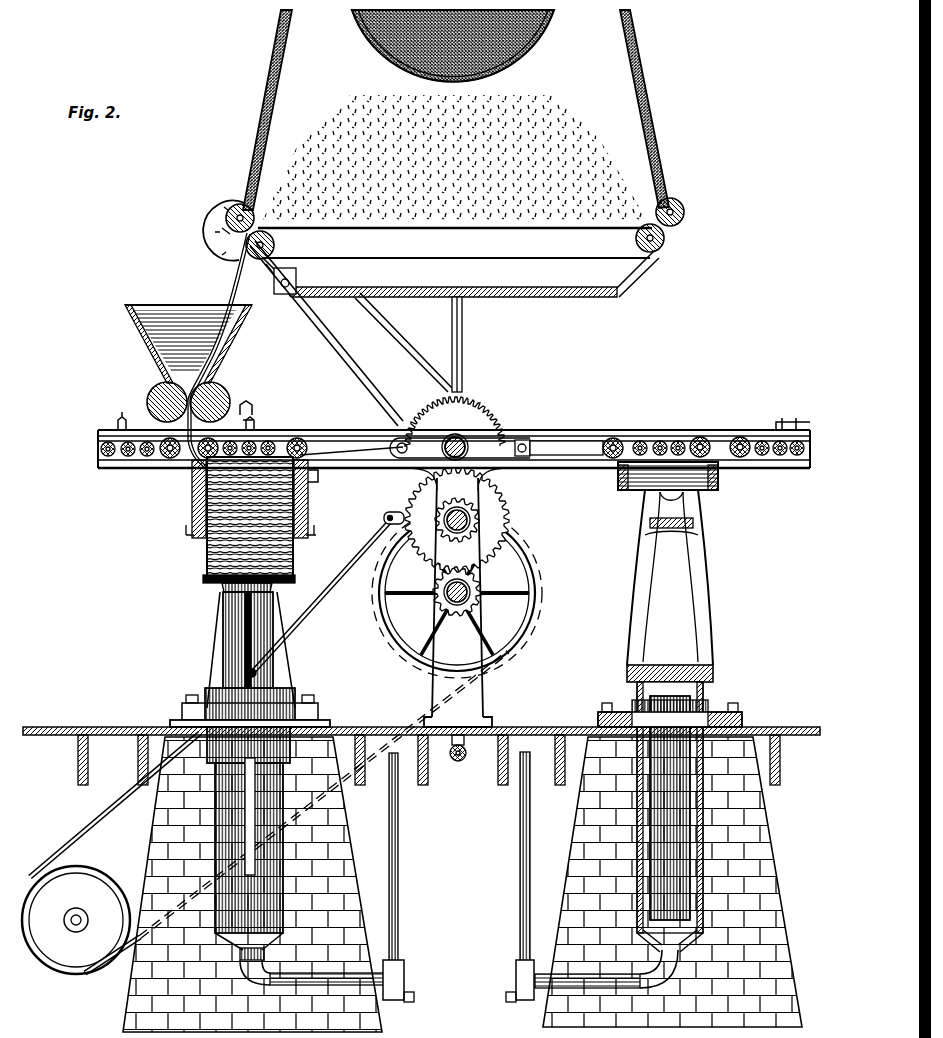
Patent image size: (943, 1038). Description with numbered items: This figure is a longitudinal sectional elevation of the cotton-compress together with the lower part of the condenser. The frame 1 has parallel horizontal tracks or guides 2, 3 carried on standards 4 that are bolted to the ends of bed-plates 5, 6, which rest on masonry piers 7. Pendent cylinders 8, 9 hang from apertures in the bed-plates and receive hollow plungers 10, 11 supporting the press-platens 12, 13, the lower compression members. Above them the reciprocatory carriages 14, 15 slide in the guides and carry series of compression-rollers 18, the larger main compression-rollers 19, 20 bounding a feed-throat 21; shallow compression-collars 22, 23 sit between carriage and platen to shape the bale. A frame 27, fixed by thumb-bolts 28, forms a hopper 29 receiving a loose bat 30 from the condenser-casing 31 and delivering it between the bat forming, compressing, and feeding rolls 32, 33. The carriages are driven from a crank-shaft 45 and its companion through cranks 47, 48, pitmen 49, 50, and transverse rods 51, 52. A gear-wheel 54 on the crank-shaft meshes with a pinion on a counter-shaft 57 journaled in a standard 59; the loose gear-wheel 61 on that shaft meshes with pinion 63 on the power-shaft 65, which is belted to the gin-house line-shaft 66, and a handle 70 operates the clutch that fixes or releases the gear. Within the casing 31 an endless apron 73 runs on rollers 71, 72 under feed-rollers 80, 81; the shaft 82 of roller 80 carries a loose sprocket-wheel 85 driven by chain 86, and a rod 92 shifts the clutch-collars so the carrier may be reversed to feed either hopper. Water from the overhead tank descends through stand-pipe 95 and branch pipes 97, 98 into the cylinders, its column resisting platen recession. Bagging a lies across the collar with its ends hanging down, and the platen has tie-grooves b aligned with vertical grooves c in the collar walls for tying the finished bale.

The frame of the press 1 is at (454, 478).
The track or guide 2 is at (403, 342).
The track or guide 3 is at (360, 462).
The standards 4 is at (214, 650).
The bed-plate 5 is at (305, 712).
The bed-plate 6 is at (732, 714).
The piers 7 is at (347, 840).
The pendent cylinder 8 is at (215, 820).
The pendent cylinder 9 is at (690, 815).
The ram or plunger 10 is at (240, 628).
The ram or plunger 11 is at (705, 853).
The press-platen 12 is at (205, 584).
The press-platen 13 is at (712, 668).
The reciprocatory carriage 14 is at (290, 432).
The reciprocatory carriage 15 is at (730, 430).
The compression-rollers 18 is at (258, 440).
The main compression-roller 19 is at (170, 462).
The main compression-roller 20 is at (166, 462).
The feed-throat 21 is at (185, 466).
The compression-collar or shaper 22 is at (312, 478).
The compression-collar or shaper 23 is at (618, 486).
The frame 27 is at (252, 400).
The thumb-bolts 28 is at (130, 420).
The hopper 29 is at (188, 334).
The loose bat 30 is at (222, 288).
The condenser-casing 31 is at (456, 116).
The bat forming, compressing, and feeding roll 32 is at (155, 388).
The bat forming, compressing, and feeding roll 33 is at (222, 392).
The crank-shaft 45 is at (456, 437).
The crank 47 is at (410, 440).
The crank 48 is at (498, 440).
The pitman 49 is at (350, 450).
The pitman 50 is at (560, 440).
The transverse rod 51 is at (324, 430).
The transverse rod 52 is at (613, 436).
The gear-wheel 54 is at (468, 396).
The counter-shaft 57 is at (457, 534).
The standard 59 is at (440, 678).
The gear-wheel 61 is at (510, 518).
The pinion 63 is at (478, 580).
The power-shaft 65 is at (456, 604).
The line-shaft 66 is at (77, 913).
The handle 70 is at (388, 524).
The roller 71 is at (275, 246).
The roller 72 is at (636, 242).
The endless apron or carrier 73 is at (444, 265).
The feed-roller 80 is at (252, 210).
The feed-roller 81 is at (680, 206).
The shaft 82 is at (222, 216).
The sprocket-wheel 85 is at (232, 206).
The chain 86 is at (318, 332).
The rod 92 is at (283, 297).
The stand-pipe 95 is at (462, 330).
The branch pipe 97 is at (404, 846).
The branch pipe 98 is at (520, 846).
The bagging a is at (190, 538).
The tie-grooves b is at (668, 672).
The vertical grooves c is at (190, 500).